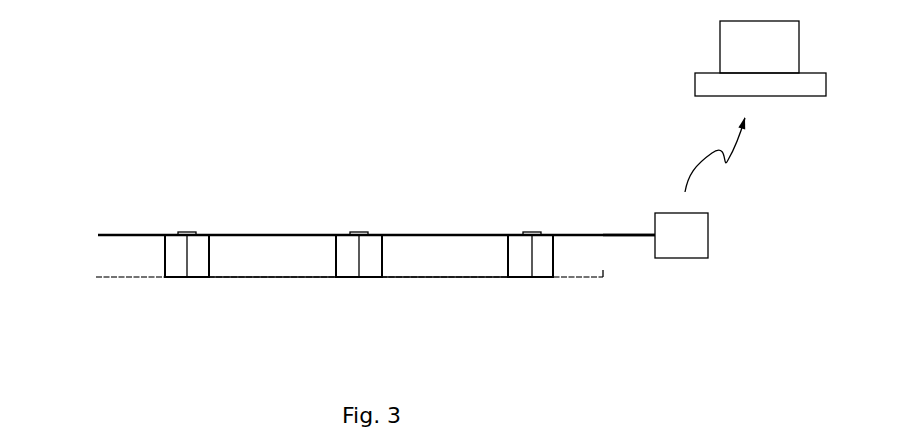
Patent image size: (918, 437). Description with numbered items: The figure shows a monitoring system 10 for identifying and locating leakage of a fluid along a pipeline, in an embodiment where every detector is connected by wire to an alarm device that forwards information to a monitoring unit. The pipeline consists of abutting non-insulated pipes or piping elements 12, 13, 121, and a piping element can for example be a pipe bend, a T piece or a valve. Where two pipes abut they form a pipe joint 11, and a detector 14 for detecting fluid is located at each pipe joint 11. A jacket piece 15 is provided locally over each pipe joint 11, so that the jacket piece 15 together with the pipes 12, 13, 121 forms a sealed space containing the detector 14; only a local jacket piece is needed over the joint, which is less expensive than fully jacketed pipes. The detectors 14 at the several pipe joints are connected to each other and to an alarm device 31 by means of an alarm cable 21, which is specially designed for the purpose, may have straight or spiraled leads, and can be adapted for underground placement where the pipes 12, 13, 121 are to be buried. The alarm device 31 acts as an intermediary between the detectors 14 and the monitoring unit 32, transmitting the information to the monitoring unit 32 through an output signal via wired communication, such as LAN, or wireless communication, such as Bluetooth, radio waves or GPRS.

The monitoring system 10 is at (441, 193).
The pipe joint 11 is at (188, 257).
The pipe 12 is at (107, 278).
The pipe 13 is at (617, 268).
The detector 14 is at (185, 233).
The jacket piece 15 is at (163, 277).
The alarm cable 21 is at (620, 213).
The alarm device 31 is at (687, 260).
The monitoring unit 32 is at (720, 48).
The pipe 121 is at (275, 278).